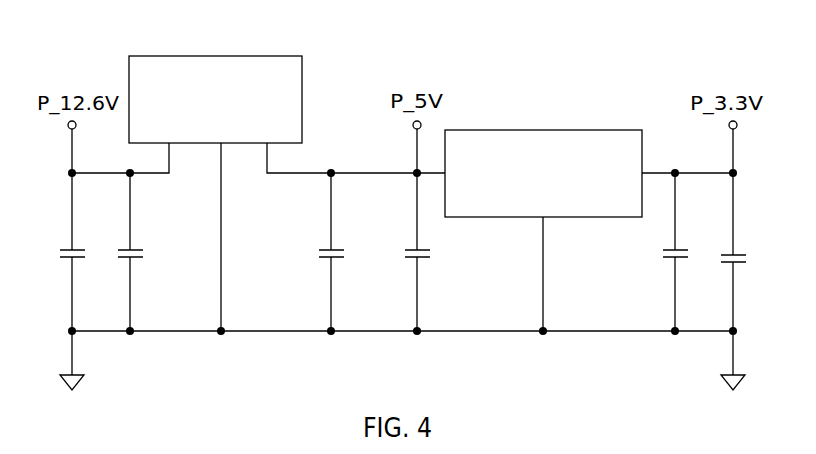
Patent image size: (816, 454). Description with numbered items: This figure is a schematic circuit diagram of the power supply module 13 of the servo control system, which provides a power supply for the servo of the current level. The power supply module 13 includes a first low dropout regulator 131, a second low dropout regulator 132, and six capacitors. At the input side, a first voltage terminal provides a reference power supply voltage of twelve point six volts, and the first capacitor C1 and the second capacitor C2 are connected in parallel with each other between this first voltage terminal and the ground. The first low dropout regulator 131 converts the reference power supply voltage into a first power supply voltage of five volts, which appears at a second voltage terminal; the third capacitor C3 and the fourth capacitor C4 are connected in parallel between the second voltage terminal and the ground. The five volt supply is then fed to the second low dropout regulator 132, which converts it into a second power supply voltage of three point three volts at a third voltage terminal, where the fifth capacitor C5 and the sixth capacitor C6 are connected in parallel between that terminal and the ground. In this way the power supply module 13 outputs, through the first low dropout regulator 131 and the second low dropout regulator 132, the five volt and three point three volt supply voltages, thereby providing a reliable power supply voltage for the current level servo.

The power supply module 13 is at (430, 38).
The first low dropout regulator 131 is at (216, 57).
The second low dropout regulator 132 is at (530, 131).
The first capacitor C1 is at (81, 239).
The second capacitor C2 is at (141, 239).
The third capacitor C3 is at (341, 239).
The fourth capacitor C4 is at (428, 239).
The fifth capacitor C5 is at (685, 241).
The sixth capacitor C6 is at (744, 245).